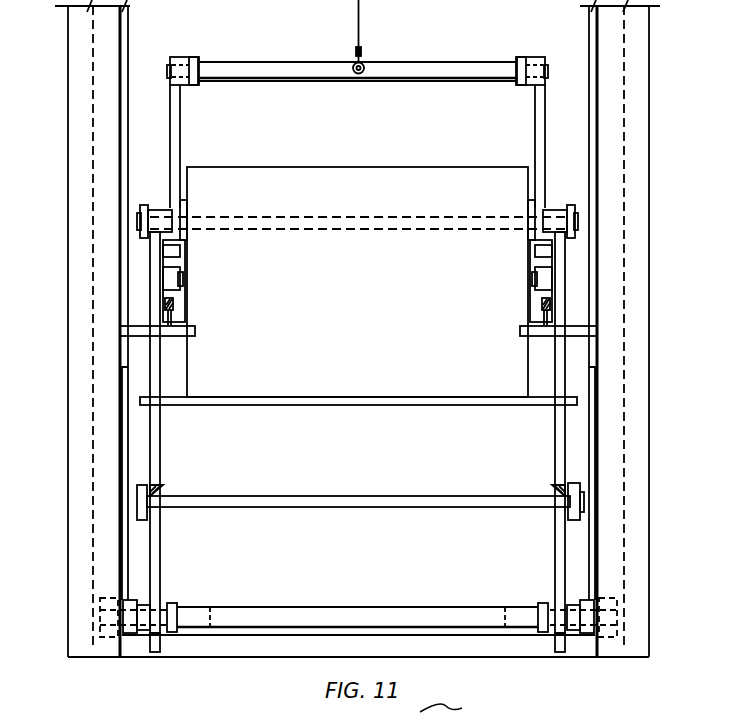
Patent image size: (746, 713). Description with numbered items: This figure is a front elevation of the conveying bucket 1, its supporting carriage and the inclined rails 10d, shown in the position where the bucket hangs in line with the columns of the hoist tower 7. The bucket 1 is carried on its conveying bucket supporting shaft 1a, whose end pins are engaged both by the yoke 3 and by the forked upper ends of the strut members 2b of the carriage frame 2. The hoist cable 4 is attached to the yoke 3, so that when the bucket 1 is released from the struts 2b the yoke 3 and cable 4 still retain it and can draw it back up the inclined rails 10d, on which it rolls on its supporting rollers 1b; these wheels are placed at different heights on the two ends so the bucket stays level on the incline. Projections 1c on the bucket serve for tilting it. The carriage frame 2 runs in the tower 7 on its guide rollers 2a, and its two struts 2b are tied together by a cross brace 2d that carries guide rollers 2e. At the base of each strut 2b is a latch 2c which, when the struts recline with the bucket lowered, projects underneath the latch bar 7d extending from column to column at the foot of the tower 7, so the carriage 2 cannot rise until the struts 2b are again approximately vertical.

The conveying bucket 1 is at (357, 282).
The conveying bucket supporting shaft 1a is at (156, 190).
The conveying bucket supporting rollers 1b is at (357, 282).
The projections for tilting bucket 1c is at (172, 397).
The carriage frame 2 is at (356, 329).
The guide rollers of frame 2a is at (357, 617).
The strut members 2b is at (357, 432).
The latch at base of strut member 2c is at (160, 650).
The cross brace between struts 2d is at (394, 508).
The guide rollers of brace 2e is at (152, 490).
The yoke 3 is at (357, 121).
The hoist cable 4 is at (336, 37).
The hoist tower 7 is at (362, 328).
The latch bar 7d is at (264, 637).
The inclined rails 10d is at (358, 322).